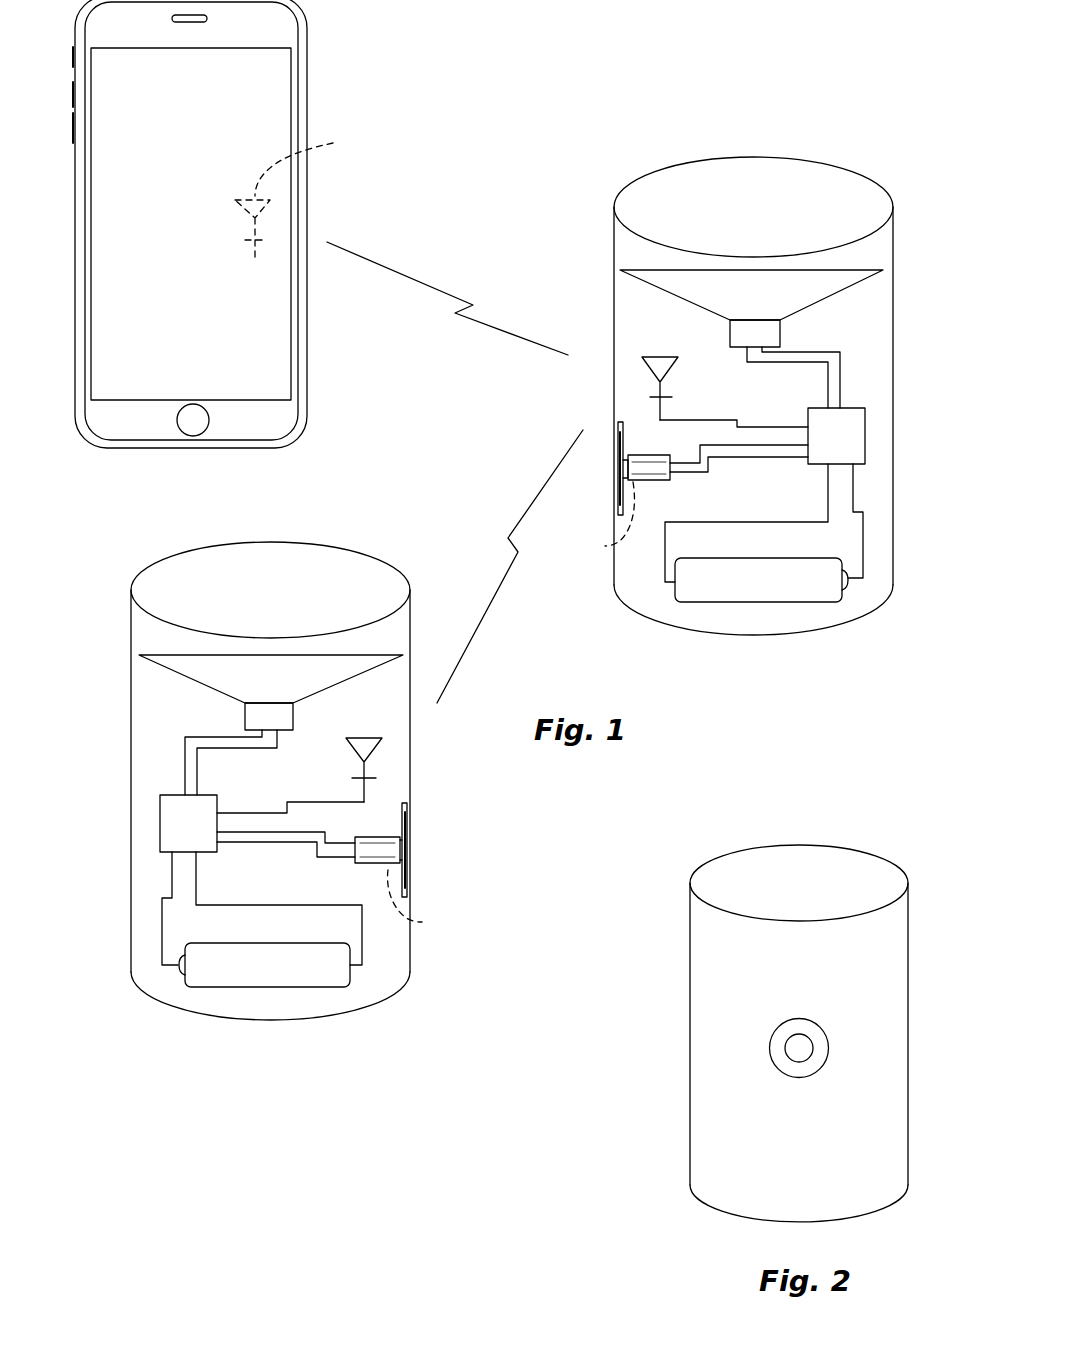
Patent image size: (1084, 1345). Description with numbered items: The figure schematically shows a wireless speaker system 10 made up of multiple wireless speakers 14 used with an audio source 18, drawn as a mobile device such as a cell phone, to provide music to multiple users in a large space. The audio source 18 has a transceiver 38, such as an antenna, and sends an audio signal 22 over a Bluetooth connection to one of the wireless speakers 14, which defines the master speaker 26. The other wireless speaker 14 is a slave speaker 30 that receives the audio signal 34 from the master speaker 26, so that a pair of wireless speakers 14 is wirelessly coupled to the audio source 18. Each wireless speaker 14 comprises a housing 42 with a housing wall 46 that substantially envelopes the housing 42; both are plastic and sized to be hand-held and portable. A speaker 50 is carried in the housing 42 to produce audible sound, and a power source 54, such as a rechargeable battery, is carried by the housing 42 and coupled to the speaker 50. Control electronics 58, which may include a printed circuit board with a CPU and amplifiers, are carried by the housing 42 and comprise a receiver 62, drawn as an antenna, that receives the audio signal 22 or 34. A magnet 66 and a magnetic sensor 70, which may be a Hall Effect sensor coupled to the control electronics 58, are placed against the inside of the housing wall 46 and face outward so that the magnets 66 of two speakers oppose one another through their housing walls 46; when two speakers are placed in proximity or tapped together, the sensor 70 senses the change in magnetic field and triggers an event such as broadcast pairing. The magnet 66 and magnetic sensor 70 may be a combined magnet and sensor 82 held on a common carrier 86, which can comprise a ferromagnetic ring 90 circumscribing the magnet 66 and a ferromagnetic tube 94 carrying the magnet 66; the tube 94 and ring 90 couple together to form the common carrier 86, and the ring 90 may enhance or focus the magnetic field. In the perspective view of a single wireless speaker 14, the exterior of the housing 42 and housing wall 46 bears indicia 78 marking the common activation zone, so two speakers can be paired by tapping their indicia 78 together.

In FIG. 1, the wireless speaker system 10 is at (457, 148).
In FIG. 1, the wireless speaker 14 is at (893, 520).
In FIG. 2, the wireless speaker 14 is at (690, 1012).
In FIG. 1, the audio source 18 is at (275, 87).
In FIG. 1, the audio signal 22 is at (387, 267).
In FIG. 1, the master speaker 26 is at (723, 637).
In FIG. 1, the slave speaker 30 is at (285, 1020).
In FIG. 1, the audio signal 34 is at (492, 567).
In FIG. 1, the transceiver 38 is at (303, 193).
In FIG. 1, the housing 42 is at (894, 222).
In FIG. 2, the housing 42 is at (690, 956).
In FIG. 1, the housing wall 46 is at (893, 254).
In FIG. 2, the housing wall 46 is at (908, 988).
In FIG. 1, the speaker 50 is at (823, 293).
In FIG. 1, the power source 54 is at (800, 590).
In FIG. 1, the control electronics 58 is at (860, 427).
In FIG. 1, the receiver 62 is at (655, 355).
In FIG. 1, the magnet 66 is at (613, 529).
In FIG. 1, the magnetic sensor 70 is at (626, 483).
In FIG. 2, the indicia 78 is at (777, 1058).
In FIG. 1, the combined magnet and sensor 82 is at (660, 483).
In FIG. 1, the common carrier 86 is at (622, 428).
In FIG. 1, the ferromagnetic ring 90 is at (616, 424).
In FIG. 1, the ferromagnetic tube 94 is at (655, 483).